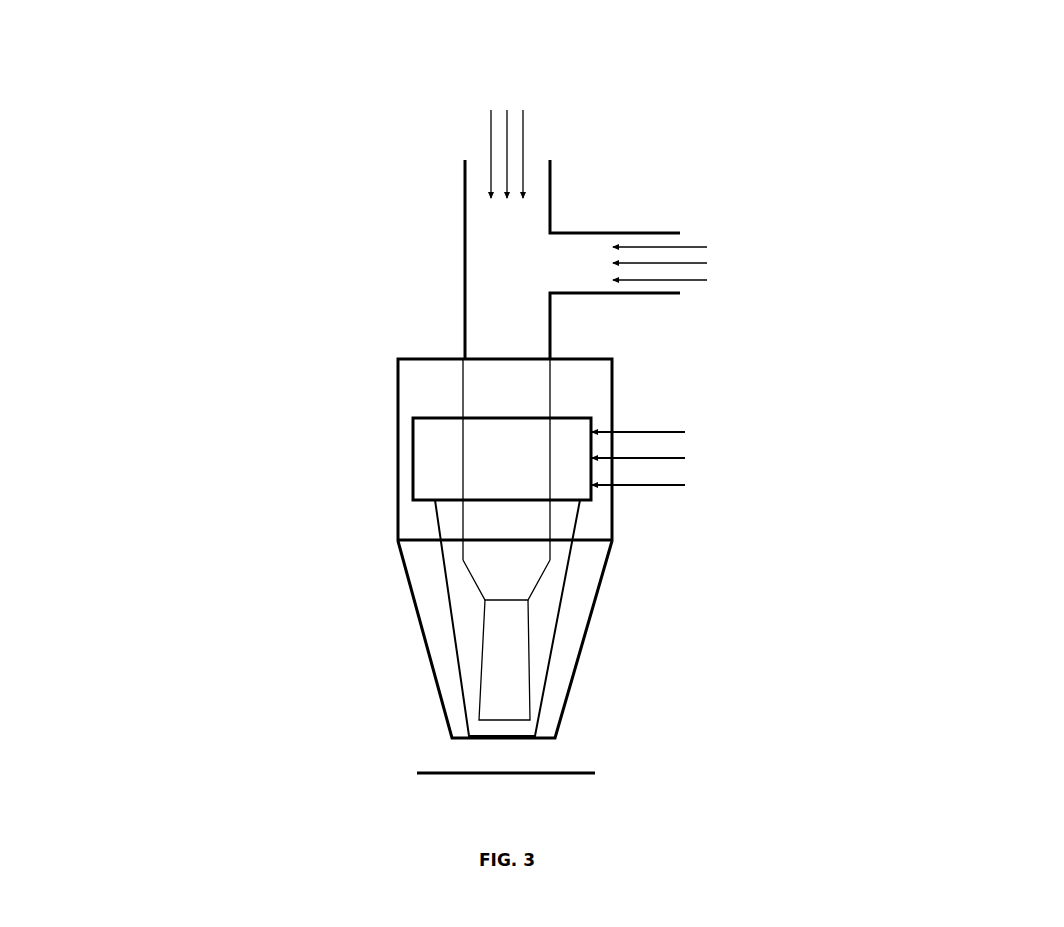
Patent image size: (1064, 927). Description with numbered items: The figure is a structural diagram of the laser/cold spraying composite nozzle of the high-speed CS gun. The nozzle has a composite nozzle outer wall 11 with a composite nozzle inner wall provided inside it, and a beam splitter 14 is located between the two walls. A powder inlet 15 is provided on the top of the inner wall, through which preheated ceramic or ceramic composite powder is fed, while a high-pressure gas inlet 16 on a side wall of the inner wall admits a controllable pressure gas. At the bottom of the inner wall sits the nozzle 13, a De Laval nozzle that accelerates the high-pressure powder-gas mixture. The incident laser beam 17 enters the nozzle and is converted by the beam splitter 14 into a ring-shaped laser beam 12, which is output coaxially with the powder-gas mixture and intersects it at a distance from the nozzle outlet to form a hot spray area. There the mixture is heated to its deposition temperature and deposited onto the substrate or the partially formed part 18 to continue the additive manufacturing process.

The composite nozzle outer wall 11 is at (428, 652).
The ring-shaped laser beam 12 is at (448, 587).
The nozzle 13 is at (465, 520).
The beam splitter 14 is at (485, 418).
The powder inlet 15 is at (523, 135).
The high-pressure gas inlet 16 is at (668, 245).
The incident laser beam 17 is at (660, 432).
The partially formed part 18 is at (572, 773).